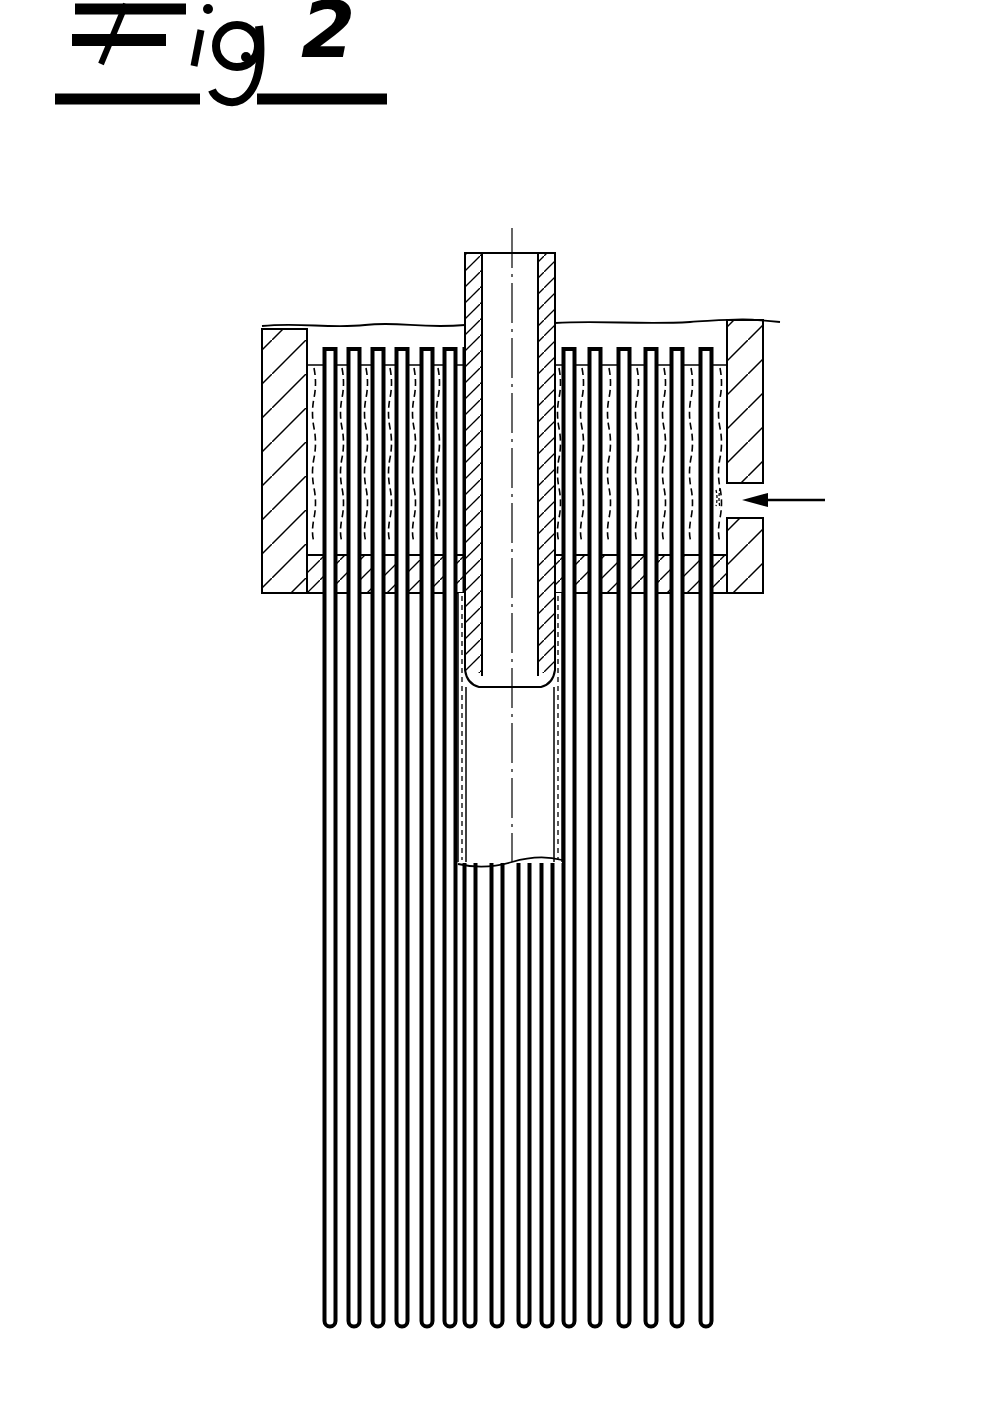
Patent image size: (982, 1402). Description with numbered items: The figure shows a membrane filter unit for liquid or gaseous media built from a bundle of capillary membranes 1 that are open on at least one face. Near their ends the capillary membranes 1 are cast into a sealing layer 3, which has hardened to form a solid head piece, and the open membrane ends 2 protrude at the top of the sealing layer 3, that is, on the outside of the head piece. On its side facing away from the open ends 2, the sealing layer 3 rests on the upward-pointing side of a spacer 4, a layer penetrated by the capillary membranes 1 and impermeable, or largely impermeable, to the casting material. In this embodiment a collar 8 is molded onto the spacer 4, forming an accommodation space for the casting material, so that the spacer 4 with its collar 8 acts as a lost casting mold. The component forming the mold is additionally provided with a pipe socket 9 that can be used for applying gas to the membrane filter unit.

The capillary membranes 1 is at (378, 1230).
The open membrane end 2 is at (348, 340).
The sealing layer 3 is at (312, 420).
The spacer 4 is at (310, 576).
The collar 8 is at (273, 463).
The pipe socket 9 is at (555, 278).